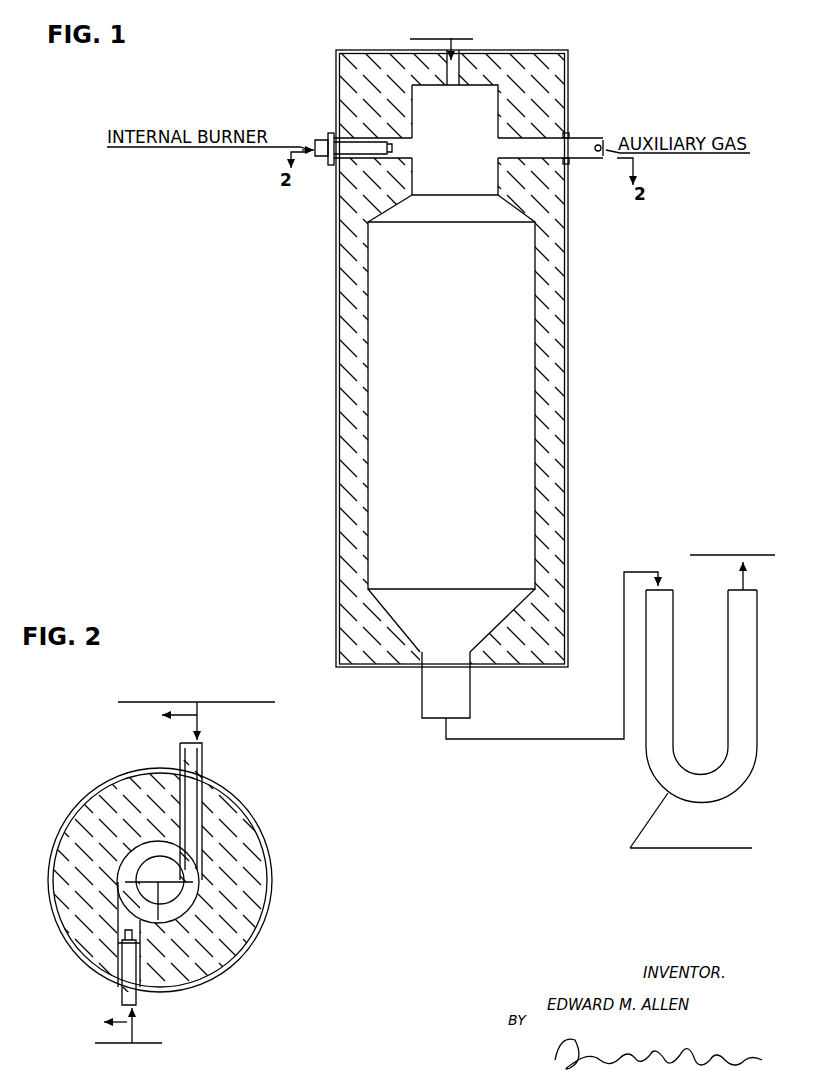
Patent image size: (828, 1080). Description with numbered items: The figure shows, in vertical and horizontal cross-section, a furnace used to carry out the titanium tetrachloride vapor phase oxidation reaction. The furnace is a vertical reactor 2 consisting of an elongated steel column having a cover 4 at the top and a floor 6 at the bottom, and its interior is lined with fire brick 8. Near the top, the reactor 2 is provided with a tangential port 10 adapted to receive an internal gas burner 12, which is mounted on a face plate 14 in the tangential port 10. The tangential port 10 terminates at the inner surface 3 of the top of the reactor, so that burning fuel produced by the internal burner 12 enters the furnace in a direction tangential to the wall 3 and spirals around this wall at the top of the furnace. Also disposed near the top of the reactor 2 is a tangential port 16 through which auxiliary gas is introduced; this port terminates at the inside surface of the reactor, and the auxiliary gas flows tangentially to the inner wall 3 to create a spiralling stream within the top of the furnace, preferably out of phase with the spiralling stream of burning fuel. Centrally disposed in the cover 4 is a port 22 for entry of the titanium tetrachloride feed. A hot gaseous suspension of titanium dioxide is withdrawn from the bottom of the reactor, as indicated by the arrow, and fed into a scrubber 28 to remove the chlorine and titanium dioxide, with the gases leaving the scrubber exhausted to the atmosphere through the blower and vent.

In FIG. 1, the vertical reactor 2 is at (334, 465).
In FIG. 1, the inner surface 3 is at (412, 118).
In FIG. 2, the inner surface 3 is at (200, 912).
In FIG. 1, the cover 4 is at (557, 40).
In FIG. 1, the floor 6 is at (390, 668).
In FIG. 1, the fire brick lining 8 is at (553, 398).
In FIG. 2, the fire brick lining 8 is at (258, 897).
In FIG. 1, the tangential port 10 is at (400, 152).
In FIG. 2, the tangential port 10 is at (124, 972).
In FIG. 1, the internal gas burner 12 is at (378, 165).
In FIG. 2, the internal gas burner 12 is at (121, 962).
In FIG. 1, the face plate 14 is at (330, 137).
In FIG. 1, the tangential port 16 is at (565, 142).
In FIG. 2, the tangential port 16 is at (203, 818).
In FIG. 1, the port 22 is at (452, 85).
In FIG. 1, the scrubber 28 is at (651, 774).